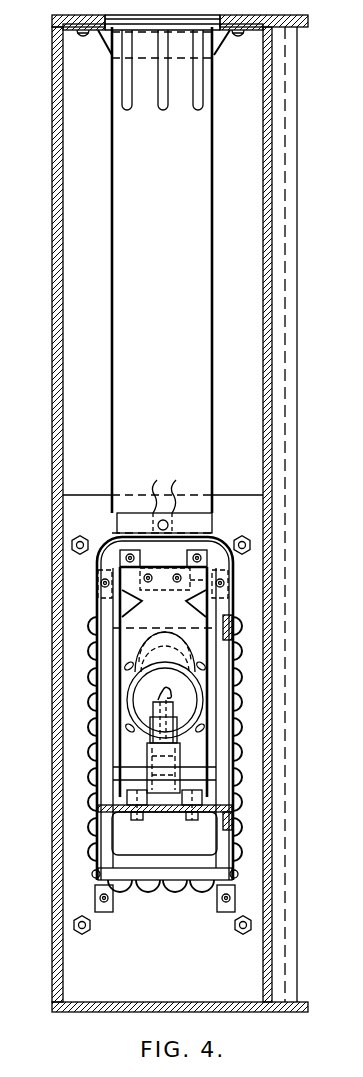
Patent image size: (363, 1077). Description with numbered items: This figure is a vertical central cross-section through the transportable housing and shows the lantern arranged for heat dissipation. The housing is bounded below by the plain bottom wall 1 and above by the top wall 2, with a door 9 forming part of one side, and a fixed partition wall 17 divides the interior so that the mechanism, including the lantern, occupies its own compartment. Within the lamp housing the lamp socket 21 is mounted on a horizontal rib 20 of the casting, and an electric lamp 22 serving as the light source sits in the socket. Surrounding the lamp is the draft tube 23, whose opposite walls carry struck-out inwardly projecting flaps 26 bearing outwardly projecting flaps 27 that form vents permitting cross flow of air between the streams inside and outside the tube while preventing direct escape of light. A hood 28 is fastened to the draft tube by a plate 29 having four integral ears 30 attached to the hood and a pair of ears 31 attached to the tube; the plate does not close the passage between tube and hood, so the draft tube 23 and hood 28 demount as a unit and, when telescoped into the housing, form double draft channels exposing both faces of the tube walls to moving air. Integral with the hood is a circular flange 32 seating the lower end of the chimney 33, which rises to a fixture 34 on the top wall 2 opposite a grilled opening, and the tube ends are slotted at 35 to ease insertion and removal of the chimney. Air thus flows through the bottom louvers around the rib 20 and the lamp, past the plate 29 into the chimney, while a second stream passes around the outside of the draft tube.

The bottom wall 1 is at (88, 1008).
The top wall 2 is at (308, 20).
The door 9 is at (52, 977).
The partition wall 17 is at (272, 832).
The horizontal rib 20 is at (155, 798).
The lamp socket 21 is at (183, 747).
The electric lamp 22 is at (177, 647).
The draft tube 23 is at (201, 686).
The inwardly projecting flaps 26 is at (160, 600).
The outwardly projecting flaps 27 is at (126, 598).
The hood 28 is at (203, 553).
The plate 29 is at (162, 567).
The ears 30 is at (218, 538).
The ears 31 is at (237, 585).
The circular flange 32 is at (200, 520).
The chimney 33 is at (113, 367).
The fixture 34 is at (103, 40).
The slots 35 is at (198, 108).